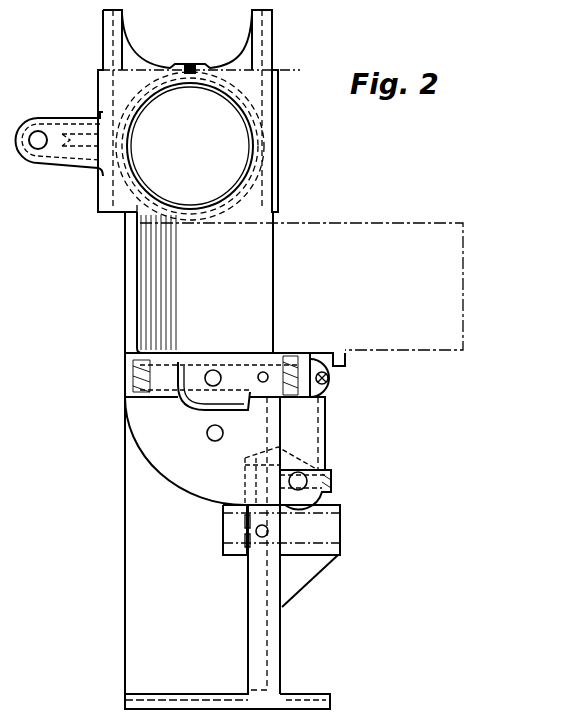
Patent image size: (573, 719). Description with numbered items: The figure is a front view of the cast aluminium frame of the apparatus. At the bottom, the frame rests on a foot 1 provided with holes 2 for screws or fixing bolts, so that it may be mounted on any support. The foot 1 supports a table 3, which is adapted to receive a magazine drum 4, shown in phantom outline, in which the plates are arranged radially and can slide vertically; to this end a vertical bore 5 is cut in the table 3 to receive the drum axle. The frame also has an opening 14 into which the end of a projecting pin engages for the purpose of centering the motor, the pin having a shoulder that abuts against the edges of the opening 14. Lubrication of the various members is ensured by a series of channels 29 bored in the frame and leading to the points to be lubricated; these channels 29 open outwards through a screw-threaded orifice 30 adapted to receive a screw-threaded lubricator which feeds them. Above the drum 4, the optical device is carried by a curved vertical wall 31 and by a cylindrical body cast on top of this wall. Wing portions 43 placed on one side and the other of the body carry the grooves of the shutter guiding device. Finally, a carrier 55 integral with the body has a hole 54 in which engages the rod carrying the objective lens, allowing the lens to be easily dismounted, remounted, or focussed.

The foot 1 is at (285, 701).
The holes 2 is at (315, 699).
The table 3 is at (340, 354).
The magazine drum 4 is at (463, 310).
The vertical bore 5 is at (320, 437).
The opening 14 is at (207, 434).
The channels 29 is at (270, 370).
The screw-threaded orifice 30 is at (330, 379).
The curved vertical wall 31 is at (205, 282).
The wing portions 43 is at (104, 44).
The hole 54 is at (37, 131).
The carrier 55 is at (68, 120).